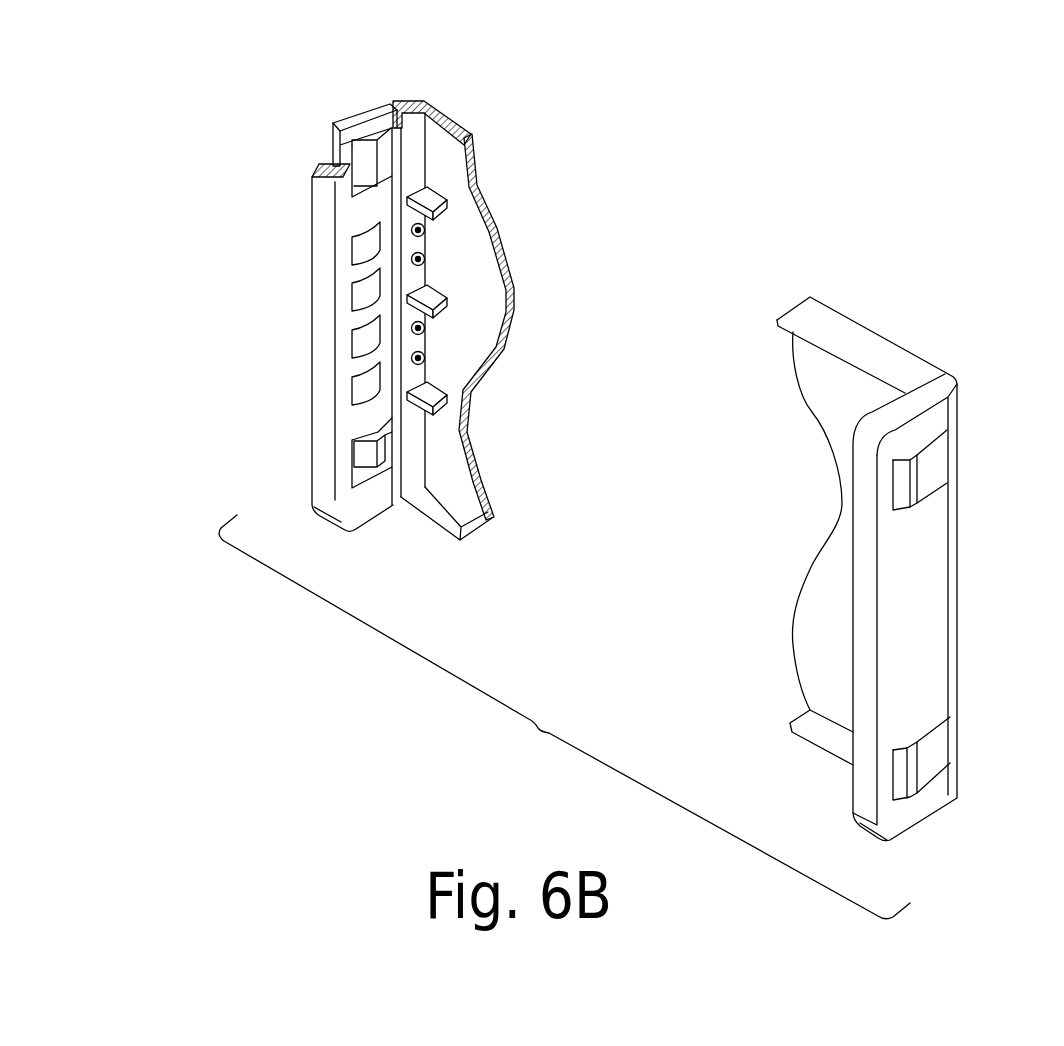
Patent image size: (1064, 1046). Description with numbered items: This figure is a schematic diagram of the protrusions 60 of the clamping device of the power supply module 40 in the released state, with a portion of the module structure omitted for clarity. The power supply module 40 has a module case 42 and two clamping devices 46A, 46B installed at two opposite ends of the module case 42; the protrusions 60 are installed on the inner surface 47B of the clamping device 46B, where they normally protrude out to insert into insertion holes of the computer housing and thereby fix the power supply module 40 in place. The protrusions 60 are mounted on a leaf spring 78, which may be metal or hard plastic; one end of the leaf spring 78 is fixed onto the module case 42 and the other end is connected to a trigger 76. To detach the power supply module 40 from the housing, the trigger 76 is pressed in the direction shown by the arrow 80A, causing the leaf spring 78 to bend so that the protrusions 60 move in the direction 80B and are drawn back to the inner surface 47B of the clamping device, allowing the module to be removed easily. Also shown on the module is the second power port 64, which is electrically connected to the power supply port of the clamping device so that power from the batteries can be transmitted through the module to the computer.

The power supply module 40 is at (533, 728).
The module case 42 is at (435, 148).
The clamping device 46A is at (927, 703).
The clamping device 46B is at (327, 347).
The inner surface 47B is at (347, 368).
The protrusions 60 is at (370, 167).
The second power port 64 is at (430, 361).
The trigger 76 is at (396, 102).
The leaf spring 78 is at (382, 137).
The arrow 80A is at (387, 103).
The direction 80B is at (327, 146).